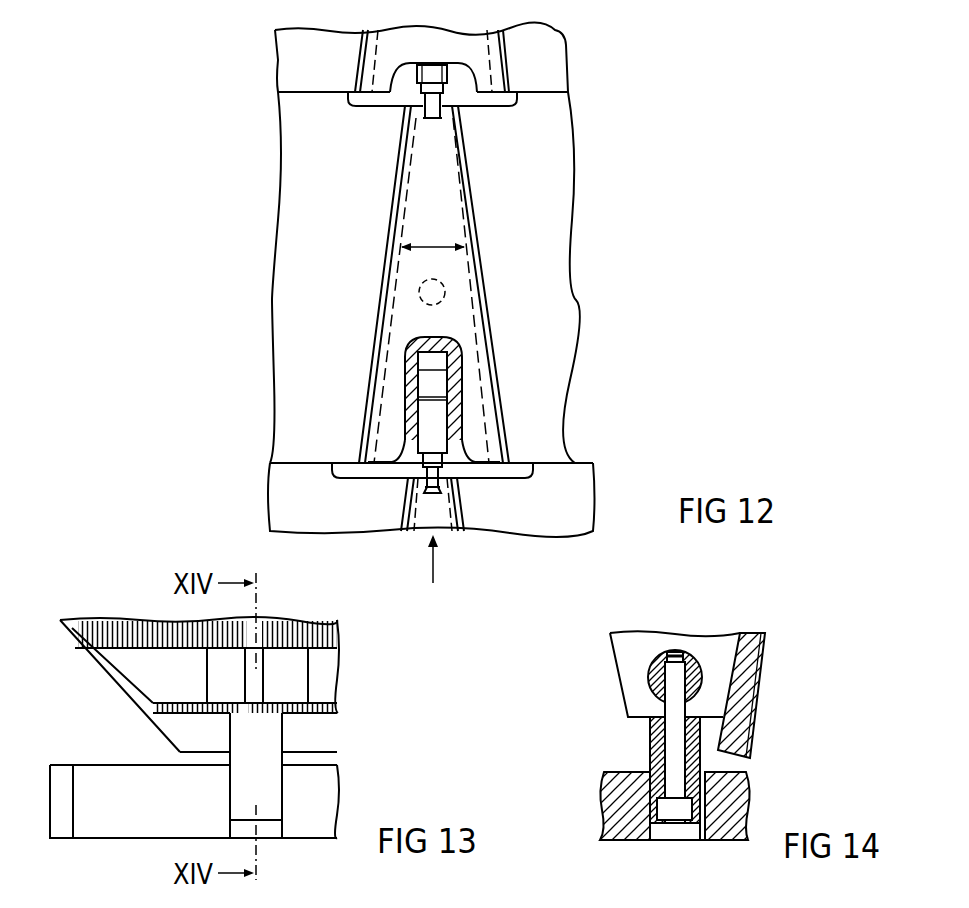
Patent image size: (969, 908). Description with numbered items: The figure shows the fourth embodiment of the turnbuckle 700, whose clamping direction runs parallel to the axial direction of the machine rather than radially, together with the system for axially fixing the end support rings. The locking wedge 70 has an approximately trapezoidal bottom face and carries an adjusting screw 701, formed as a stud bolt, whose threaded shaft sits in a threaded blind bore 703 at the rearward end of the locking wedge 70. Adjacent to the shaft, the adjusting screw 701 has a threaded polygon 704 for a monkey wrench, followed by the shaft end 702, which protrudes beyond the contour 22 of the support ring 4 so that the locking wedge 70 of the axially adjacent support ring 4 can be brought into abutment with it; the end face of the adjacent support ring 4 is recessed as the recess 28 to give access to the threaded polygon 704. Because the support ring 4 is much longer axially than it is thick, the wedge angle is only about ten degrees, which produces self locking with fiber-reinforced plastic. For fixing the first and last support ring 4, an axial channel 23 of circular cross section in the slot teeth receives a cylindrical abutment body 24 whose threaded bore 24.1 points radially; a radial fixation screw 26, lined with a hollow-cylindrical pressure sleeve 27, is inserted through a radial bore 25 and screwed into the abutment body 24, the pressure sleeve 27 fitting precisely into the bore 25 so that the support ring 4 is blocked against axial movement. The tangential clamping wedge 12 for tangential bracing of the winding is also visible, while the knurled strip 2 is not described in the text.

In FIG. 12, the support ring 4 is at (256, 172).
In FIG. 13, the support ring 4 is at (125, 778).
In FIG. 14, the support ring 4 is at (740, 793).
In FIG. 12, the turnbuckle 700 is at (497, 163).
In FIG. 12, the locking wedge 70 is at (437, 192).
In FIG. 12, the threaded blind bore 703 is at (453, 357).
In FIG. 12, the adjusting screw 701 is at (433, 415).
In FIG. 12, the threaded polygon 704 is at (447, 457).
In FIG. 12, the shaft end 702 is at (448, 487).
In FIG. 12, the recess 28 is at (352, 470).
In FIG. 12, the contour 22 is at (307, 479).
In FIG. 13, the knurled cutting strip 2 is at (124, 636).
In FIG. 13, the abutment body 24 is at (223, 673).
In FIG. 13, the pressure sleeve 27 is at (262, 742).
In FIG. 14, the pressure sleeve 27 is at (650, 760).
In FIG. 14, the threaded bore 24.1 is at (696, 652).
In FIG. 14, the axial channel 23 is at (655, 687).
In FIG. 14, the tangential clamping wedge 12 is at (748, 677).
In FIG. 14, the radial fixation screw 26 is at (673, 753).
In FIG. 14, the radial bore 25 is at (650, 830).